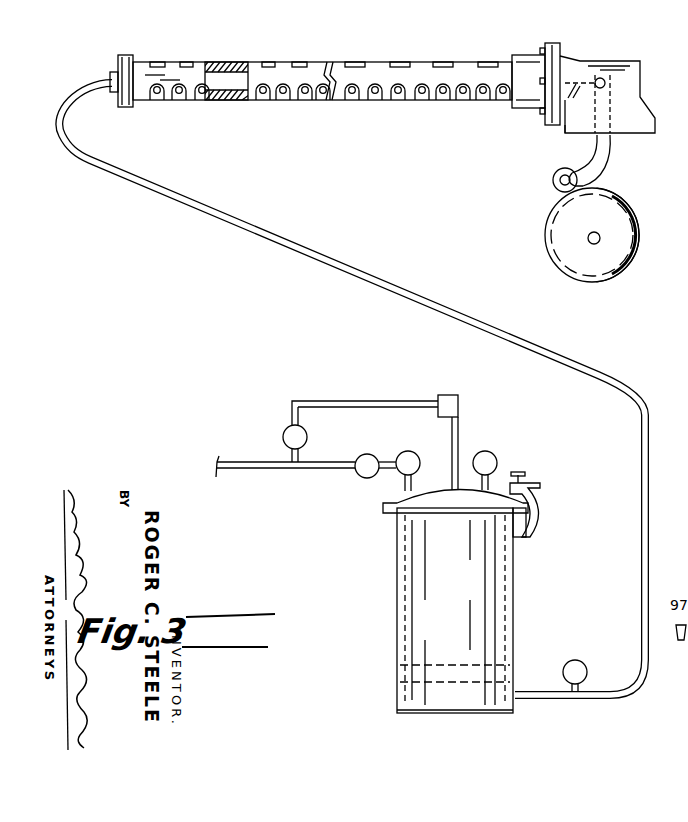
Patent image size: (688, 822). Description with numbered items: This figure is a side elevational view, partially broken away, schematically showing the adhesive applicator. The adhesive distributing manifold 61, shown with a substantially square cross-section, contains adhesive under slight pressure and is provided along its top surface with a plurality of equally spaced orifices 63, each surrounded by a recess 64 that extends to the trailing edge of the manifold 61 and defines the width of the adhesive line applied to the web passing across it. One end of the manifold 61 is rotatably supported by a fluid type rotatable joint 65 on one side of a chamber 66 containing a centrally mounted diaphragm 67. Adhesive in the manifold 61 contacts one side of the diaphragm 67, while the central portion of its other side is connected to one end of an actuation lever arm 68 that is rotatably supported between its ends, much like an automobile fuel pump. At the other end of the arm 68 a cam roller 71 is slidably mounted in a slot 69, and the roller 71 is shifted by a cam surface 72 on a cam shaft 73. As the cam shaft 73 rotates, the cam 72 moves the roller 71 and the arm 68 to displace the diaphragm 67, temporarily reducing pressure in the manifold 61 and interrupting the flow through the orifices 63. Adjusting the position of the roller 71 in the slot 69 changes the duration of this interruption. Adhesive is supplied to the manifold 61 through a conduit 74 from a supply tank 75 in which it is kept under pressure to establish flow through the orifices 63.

The adhesive distributing manifold 61 is at (172, 70).
The orifices 63 is at (168, 100).
The recess 64 is at (210, 96).
The fluid type rotatable joint 65 is at (528, 52).
The chamber 66 is at (568, 62).
The diaphragm 67 is at (548, 123).
The actuation lever arm 68 is at (608, 153).
The slot 69 is at (590, 172).
The cam roller 71 is at (552, 182).
The cam surface 72 is at (646, 234).
The cam shaft 73 is at (595, 246).
The conduit 74 is at (622, 382).
The supply tank 75 is at (497, 610).